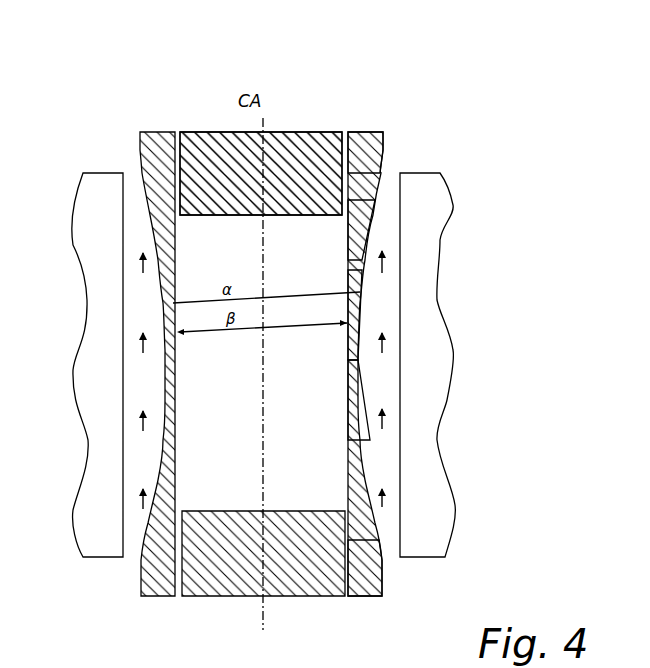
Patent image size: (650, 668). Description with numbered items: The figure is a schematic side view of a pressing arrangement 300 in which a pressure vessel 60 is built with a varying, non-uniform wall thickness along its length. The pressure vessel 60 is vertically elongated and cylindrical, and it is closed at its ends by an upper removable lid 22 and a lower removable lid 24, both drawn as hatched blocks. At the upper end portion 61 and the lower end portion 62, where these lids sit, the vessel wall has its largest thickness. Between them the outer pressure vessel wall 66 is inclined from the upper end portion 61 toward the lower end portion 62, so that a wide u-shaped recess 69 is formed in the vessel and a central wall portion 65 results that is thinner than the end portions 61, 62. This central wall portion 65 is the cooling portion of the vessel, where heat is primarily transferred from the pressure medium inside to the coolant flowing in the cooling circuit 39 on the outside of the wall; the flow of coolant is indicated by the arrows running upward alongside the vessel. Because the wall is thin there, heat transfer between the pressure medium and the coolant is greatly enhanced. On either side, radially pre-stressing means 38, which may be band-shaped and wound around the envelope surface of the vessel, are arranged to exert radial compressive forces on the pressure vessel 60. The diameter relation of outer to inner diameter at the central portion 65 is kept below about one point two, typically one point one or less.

The pressing arrangement 300 is at (314, 104).
The upper removable lid 22 is at (236, 130).
The lower removable lid 24 is at (228, 597).
The cooling circuit 39 is at (140, 306).
The pressure vessel 60 is at (366, 130).
The upper end portion 61 is at (372, 152).
The lower end portion 62 is at (385, 572).
The central wall portion 65 is at (360, 288).
The outer pressure vessel wall 66 is at (360, 210).
The u-shaped recess 69 is at (360, 380).
The radially pre-stressing means 38 is at (93, 560).